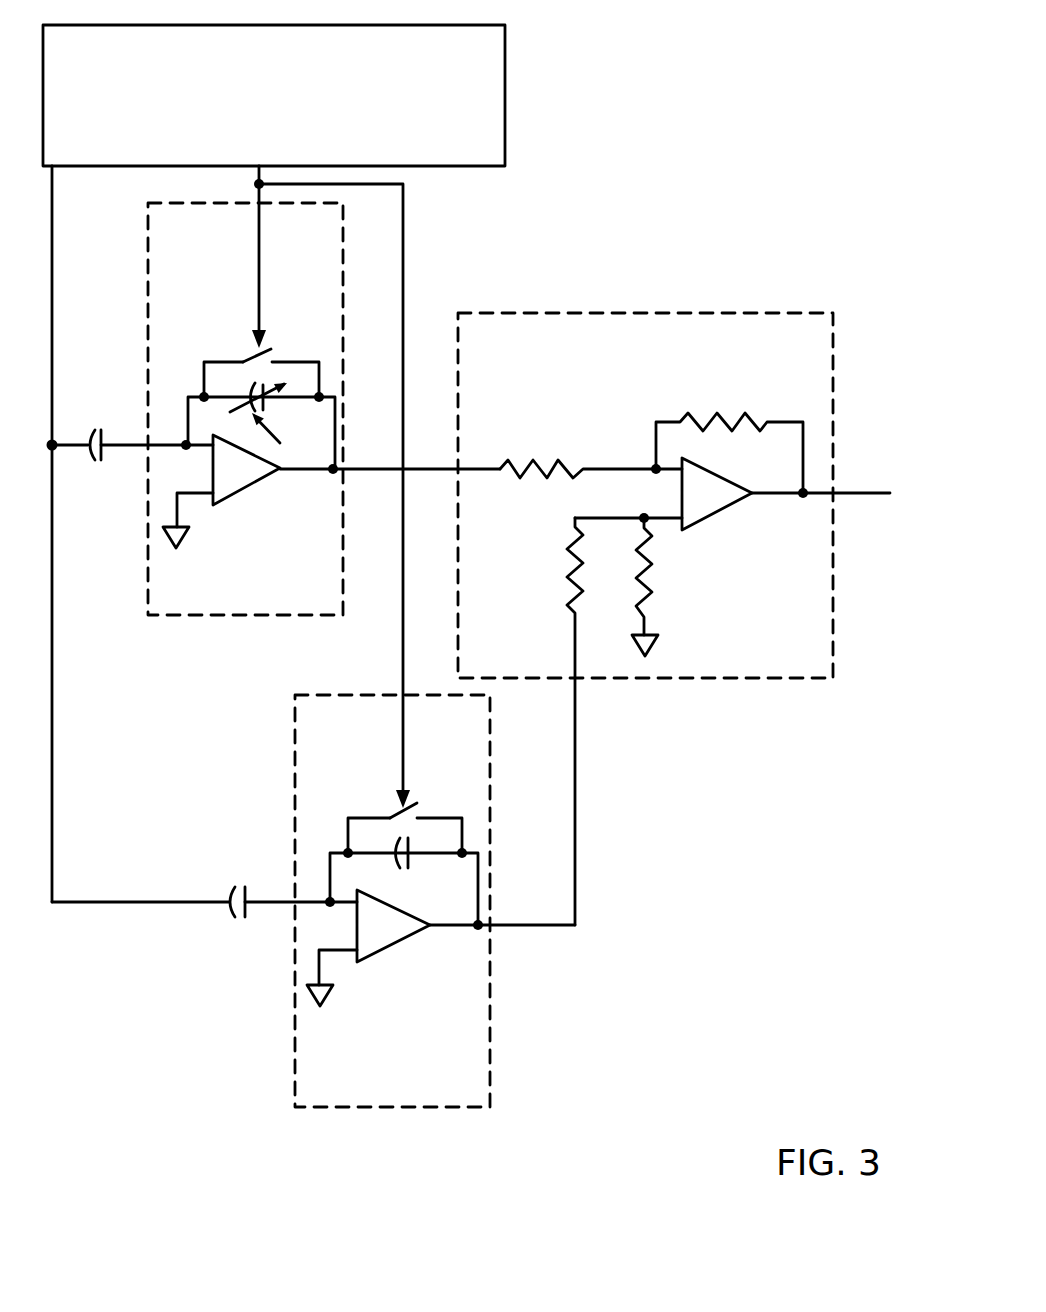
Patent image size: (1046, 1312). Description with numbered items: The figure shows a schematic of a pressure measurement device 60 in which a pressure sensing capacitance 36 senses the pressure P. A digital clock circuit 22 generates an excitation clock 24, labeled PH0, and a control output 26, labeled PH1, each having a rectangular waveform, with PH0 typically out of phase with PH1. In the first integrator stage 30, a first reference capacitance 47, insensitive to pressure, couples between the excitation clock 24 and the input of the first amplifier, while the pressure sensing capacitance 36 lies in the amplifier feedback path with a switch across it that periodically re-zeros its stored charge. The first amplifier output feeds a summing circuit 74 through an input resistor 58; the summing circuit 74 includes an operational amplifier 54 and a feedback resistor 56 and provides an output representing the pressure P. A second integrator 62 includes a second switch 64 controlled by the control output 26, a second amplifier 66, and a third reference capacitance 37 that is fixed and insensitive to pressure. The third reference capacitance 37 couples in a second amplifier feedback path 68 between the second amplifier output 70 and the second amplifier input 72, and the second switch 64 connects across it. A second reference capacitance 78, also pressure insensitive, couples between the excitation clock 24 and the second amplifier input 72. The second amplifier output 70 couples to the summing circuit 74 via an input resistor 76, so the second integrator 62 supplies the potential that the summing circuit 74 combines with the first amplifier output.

The digital clock circuit 22 is at (506, 88).
The pressure measurement device 60 is at (702, 72).
The excitation clock 24 is at (53, 170).
The control output 26 is at (404, 200).
The first amplifier stage 30 is at (240, 615).
The pressure sensing capacitance 36 is at (262, 383).
The first reference capacitance 47 is at (93, 430).
The summing circuit 74 is at (610, 313).
The input resistor 58 is at (533, 460).
The feedback resistor 56 is at (717, 413).
The operational amplifier 54 is at (697, 498).
The input resistor 76 is at (577, 567).
The second integrator 62 is at (295, 1055).
The second amplifier 66 is at (380, 950).
The second amplifier output 70 is at (432, 926).
The second amplifier input 72 is at (355, 903).
The second reference capacitance 78 is at (242, 887).
The second amplifier feedback path 68 is at (477, 883).
The second switch 64 is at (400, 812).
The third reference capacitance 37 is at (410, 840).